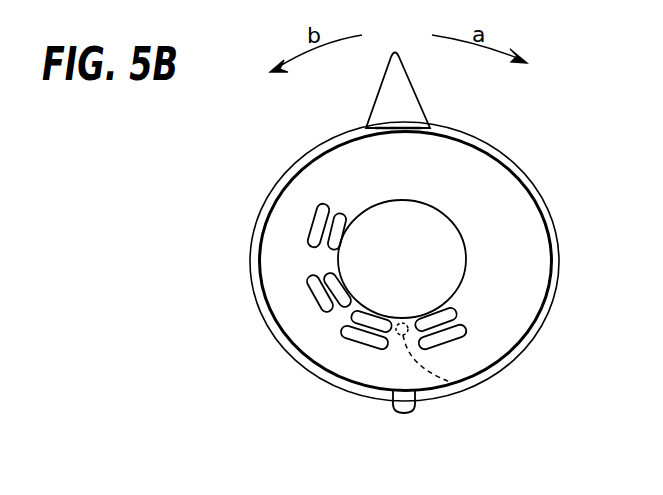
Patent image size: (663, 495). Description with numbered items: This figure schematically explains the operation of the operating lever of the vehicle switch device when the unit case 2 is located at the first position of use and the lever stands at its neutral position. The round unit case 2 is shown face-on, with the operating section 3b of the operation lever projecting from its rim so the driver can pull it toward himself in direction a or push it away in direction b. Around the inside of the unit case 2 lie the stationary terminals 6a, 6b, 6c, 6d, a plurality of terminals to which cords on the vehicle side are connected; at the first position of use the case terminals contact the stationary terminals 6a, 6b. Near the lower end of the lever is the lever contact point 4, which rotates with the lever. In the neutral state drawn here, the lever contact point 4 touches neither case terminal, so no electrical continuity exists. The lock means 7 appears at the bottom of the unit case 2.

The unit case 2 is at (302, 188).
The operating section 3b is at (377, 90).
The lever contact point 4 is at (453, 383).
The stationary terminal 6a is at (463, 333).
The stationary terminal 6b is at (358, 348).
The stationary terminal 6c is at (315, 300).
The stationary terminal 6d is at (308, 228).
The lock means 7 is at (392, 407).